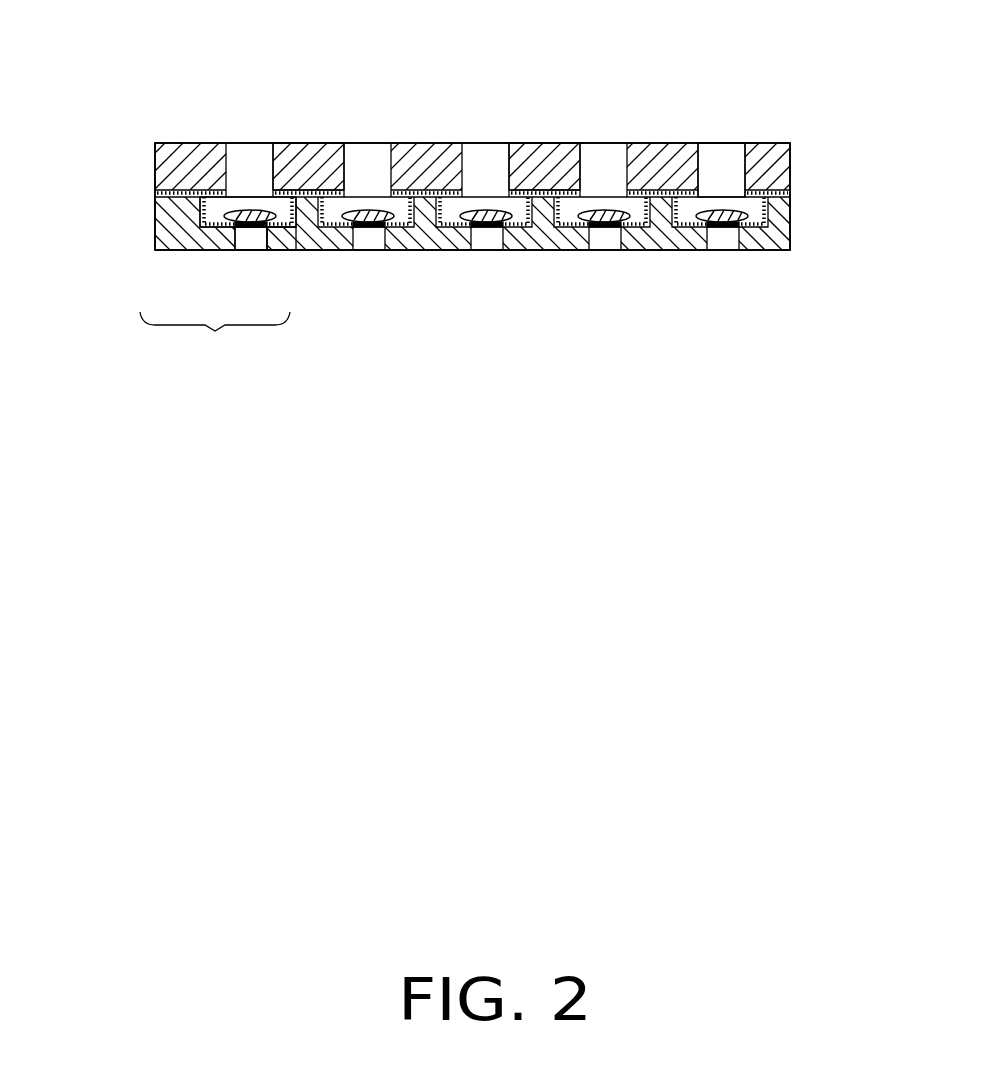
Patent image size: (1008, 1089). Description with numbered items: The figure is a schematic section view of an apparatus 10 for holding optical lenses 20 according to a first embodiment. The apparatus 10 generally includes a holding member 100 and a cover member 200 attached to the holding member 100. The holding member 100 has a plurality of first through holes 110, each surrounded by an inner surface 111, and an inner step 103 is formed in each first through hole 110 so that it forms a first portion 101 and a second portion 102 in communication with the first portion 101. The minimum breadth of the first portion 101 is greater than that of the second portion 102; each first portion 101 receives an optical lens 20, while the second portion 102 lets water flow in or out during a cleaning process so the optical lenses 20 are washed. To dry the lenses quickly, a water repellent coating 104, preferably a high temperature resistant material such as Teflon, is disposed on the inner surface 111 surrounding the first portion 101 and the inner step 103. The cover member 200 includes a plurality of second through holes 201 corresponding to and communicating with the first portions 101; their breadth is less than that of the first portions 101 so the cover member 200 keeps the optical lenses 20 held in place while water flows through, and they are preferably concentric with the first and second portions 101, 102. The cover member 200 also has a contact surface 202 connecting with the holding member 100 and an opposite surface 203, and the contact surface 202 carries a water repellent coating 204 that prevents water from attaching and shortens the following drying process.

The apparatus 10 is at (475, 50).
The optical lens 20 is at (603, 227).
The holding member 100 is at (778, 230).
The first portion 101 is at (215, 215).
The second portion 102 is at (245, 242).
The inner step 103 is at (290, 236).
The water repellent coating 104 is at (755, 228).
The first through hole 110 is at (215, 342).
The inner surface 111 is at (197, 213).
The cover member 200 is at (775, 167).
The second through hole 201 is at (717, 148).
The contact surface 202 is at (161, 194).
The opposite surface 203 is at (528, 143).
The water repellent coating 204 is at (292, 146).